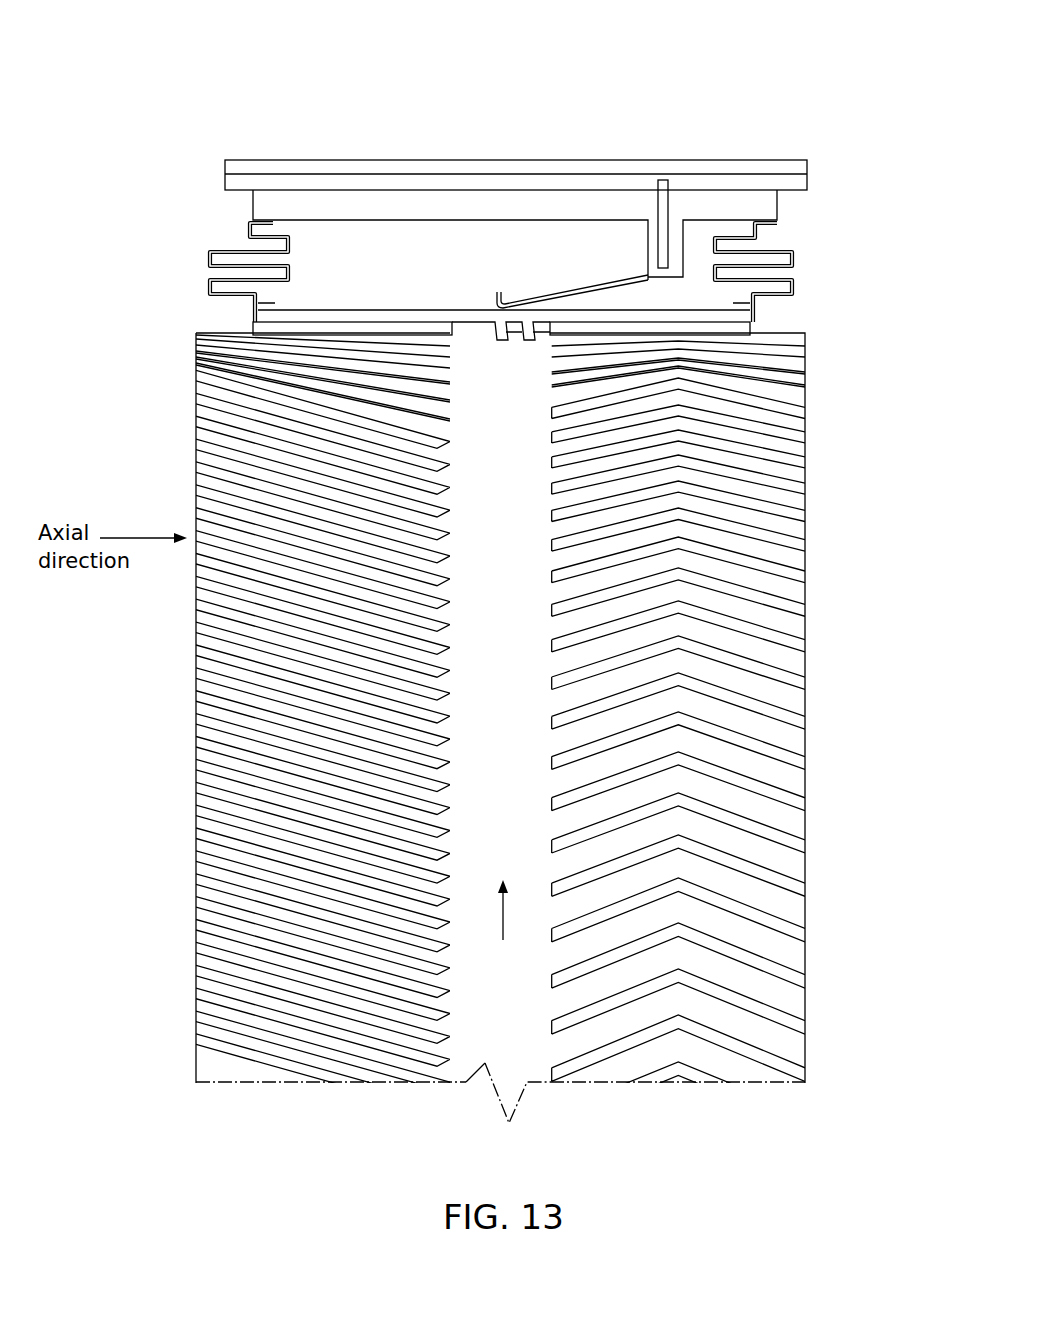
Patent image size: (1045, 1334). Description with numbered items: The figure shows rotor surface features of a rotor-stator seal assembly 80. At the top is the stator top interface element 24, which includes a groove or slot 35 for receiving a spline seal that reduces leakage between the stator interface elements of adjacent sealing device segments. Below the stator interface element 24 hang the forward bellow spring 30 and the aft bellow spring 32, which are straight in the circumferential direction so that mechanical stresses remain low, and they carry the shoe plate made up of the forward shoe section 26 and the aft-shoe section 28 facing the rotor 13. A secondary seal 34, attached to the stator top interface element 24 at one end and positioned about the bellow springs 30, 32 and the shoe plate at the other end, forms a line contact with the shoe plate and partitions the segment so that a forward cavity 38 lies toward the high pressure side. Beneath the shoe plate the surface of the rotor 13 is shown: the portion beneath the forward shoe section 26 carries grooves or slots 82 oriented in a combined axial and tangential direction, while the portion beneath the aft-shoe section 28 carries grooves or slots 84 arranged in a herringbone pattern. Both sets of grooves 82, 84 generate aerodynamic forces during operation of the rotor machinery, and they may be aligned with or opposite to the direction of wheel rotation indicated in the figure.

The rotor-stator seal assembly 80 is at (808, 58).
The stator top interface element 24 is at (283, 160).
The forward cavity 38 is at (421, 267).
The slot 35 is at (668, 200).
The forward bellow spring 30 is at (212, 258).
The aft bellow spring 32 is at (792, 248).
The secondary seal 34 is at (598, 283).
The forward shoe section 26 is at (253, 326).
The aft-shoe section 28 is at (723, 328).
The rotor 13 is at (808, 752).
The grooves or slots 82 is at (220, 408).
The herringbone grooves or slots 84 is at (785, 510).